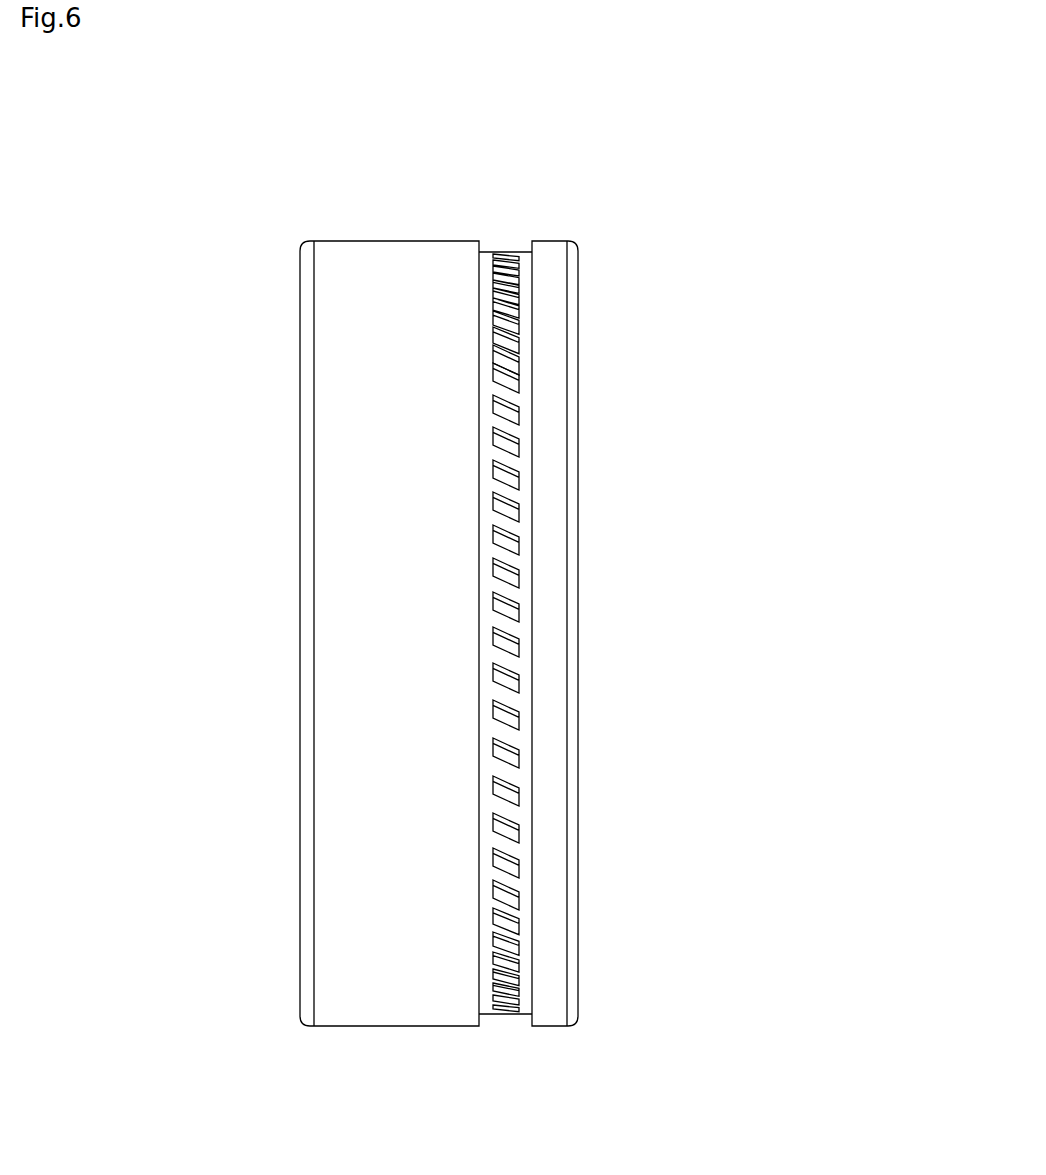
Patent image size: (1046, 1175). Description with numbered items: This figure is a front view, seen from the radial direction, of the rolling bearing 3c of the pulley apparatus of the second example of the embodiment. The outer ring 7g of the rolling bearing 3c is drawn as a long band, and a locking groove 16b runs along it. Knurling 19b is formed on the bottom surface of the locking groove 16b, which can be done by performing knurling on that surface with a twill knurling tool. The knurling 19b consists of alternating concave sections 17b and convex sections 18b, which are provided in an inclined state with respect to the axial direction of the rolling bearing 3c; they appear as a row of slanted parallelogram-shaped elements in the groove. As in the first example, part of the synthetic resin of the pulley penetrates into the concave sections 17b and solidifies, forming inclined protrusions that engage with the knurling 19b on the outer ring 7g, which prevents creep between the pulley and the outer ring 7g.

The rolling bearing 3c is at (392, 197).
The outer ring 7g is at (338, 458).
The locking groove 16b is at (525, 248).
The knurling 19b is at (516, 382).
The concave sections 17b is at (518, 458).
The convex sections 18b is at (517, 542).